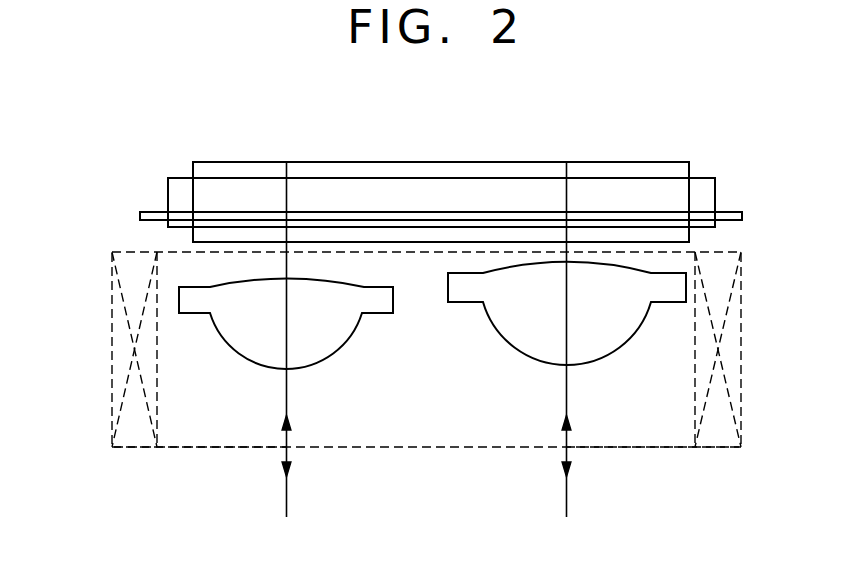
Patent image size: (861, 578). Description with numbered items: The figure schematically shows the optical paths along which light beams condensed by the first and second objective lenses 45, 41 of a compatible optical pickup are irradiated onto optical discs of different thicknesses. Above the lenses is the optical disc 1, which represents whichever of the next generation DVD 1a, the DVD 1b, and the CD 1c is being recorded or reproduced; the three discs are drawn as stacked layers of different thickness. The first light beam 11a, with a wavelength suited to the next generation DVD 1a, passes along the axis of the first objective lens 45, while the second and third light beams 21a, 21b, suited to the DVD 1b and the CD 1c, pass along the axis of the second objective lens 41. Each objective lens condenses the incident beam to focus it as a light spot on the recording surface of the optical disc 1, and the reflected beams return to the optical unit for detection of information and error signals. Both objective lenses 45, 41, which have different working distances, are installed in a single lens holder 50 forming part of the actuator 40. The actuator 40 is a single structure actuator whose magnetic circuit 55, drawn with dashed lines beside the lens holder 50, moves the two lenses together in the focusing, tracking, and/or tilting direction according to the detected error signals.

The optical disc 1 is at (460, 152).
The next generation DVD 1a is at (742, 217).
The DVD 1b is at (712, 188).
The CD 1c is at (685, 170).
The actuator 40 is at (86, 298).
The second objective lens 41 is at (383, 313).
The first objective lens 45 is at (617, 333).
The single lens holder 50 is at (187, 448).
The magnetic circuit 55 is at (718, 448).
The second light beam 21a is at (346, 339).
The third light beam 21b is at (287, 488).
The first light beam 11a is at (567, 489).